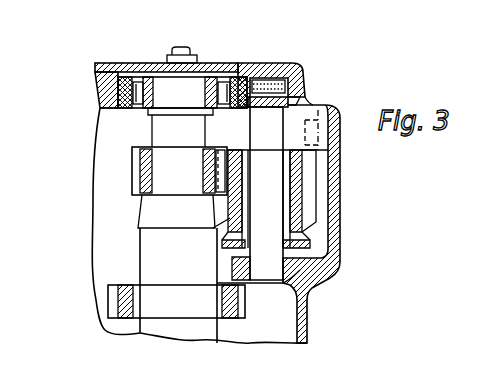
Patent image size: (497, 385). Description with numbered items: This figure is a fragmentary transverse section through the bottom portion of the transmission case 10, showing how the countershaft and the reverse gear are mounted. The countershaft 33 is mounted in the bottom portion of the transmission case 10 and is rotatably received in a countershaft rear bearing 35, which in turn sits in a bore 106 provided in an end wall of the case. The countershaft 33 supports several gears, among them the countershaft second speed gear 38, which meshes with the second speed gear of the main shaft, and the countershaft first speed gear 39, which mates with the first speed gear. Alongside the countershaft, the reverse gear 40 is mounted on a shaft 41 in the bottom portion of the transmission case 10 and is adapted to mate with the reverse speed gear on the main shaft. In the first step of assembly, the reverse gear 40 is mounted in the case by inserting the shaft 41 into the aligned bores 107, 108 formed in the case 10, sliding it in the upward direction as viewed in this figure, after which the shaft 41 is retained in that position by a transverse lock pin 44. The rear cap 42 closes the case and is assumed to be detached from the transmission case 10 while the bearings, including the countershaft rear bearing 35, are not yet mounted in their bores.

The transmission case 10 is at (310, 103).
The rear cap 42 is at (108, 63).
The countershaft rear bearing 35 is at (238, 76).
The transverse lock pin 44 is at (287, 100).
The bore 108 is at (280, 108).
The shaft 41 is at (272, 193).
The bore 106 is at (118, 90).
The countershaft first speed gear 39 is at (137, 165).
The reverse gear 40 is at (307, 196).
The countershaft 33 is at (188, 270).
The countershaft second speed gear 38 is at (240, 302).
The bore 107 is at (308, 287).